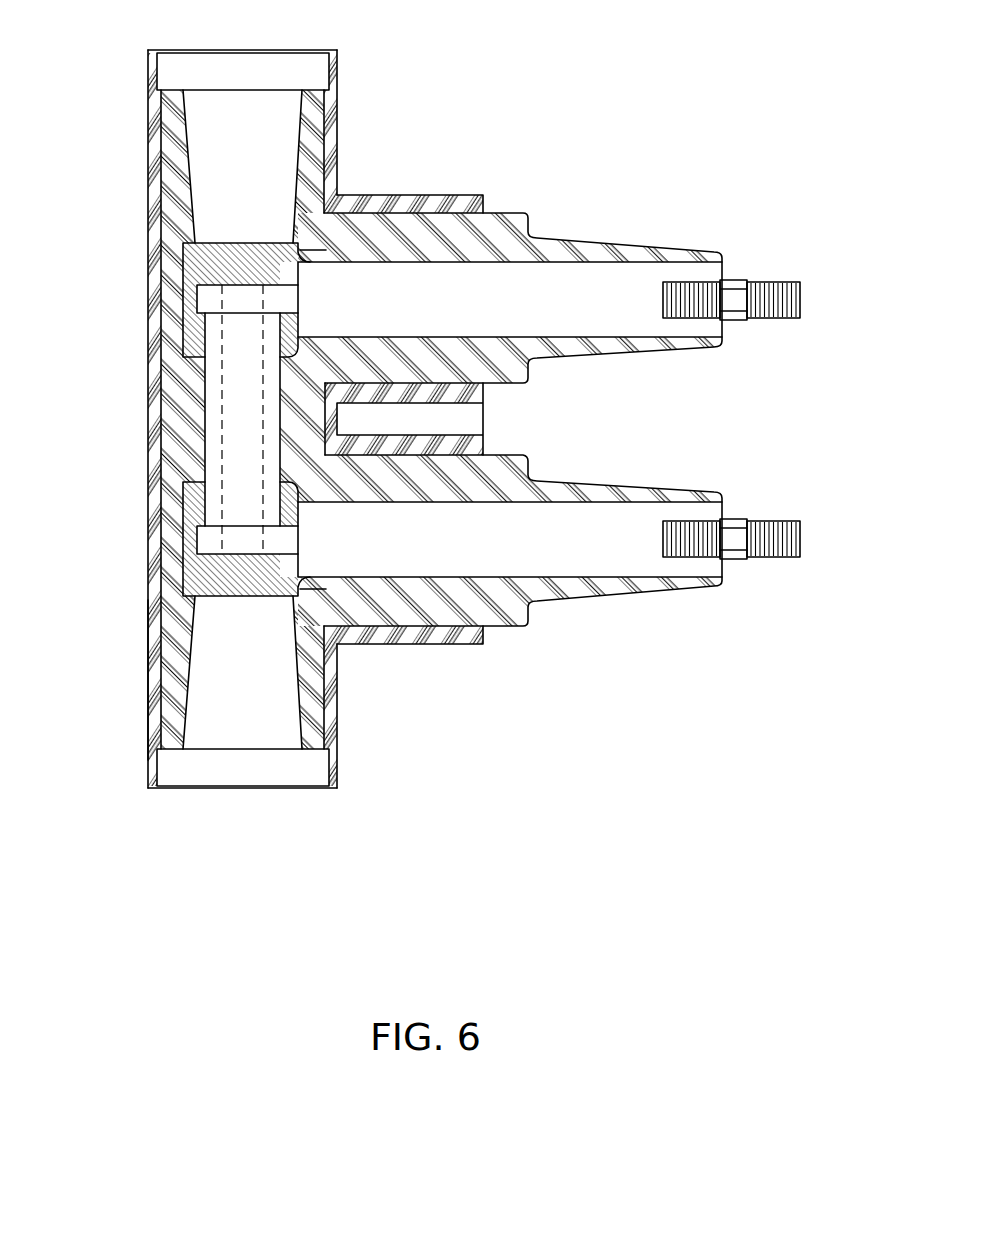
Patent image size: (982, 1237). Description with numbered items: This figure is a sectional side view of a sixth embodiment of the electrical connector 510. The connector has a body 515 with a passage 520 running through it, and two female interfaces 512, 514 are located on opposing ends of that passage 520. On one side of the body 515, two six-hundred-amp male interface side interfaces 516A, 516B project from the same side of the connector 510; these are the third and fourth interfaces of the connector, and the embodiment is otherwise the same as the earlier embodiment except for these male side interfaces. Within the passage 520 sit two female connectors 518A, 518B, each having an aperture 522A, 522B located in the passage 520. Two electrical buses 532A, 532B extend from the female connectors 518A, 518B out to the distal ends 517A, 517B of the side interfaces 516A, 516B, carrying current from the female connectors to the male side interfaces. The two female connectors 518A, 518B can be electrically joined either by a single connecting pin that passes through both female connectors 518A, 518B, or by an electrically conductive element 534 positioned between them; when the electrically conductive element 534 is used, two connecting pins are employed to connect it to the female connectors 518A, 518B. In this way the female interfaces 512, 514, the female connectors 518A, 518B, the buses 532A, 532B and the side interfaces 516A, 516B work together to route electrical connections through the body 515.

The electrical connector 510 is at (118, 260).
The female interface 512 is at (306, 50).
The female interface 514 is at (197, 790).
The body 515 is at (148, 681).
The male interface side interface 516A is at (690, 248).
The male interface side interface 516B is at (690, 490).
The distal end 517A is at (723, 325).
The distal end 517B is at (723, 556).
The female connector 518A is at (212, 297).
The female connector 518B is at (253, 533).
The passage 520 is at (272, 692).
The aperture 522A is at (243, 285).
The aperture 522B is at (243, 557).
The electrical bus 532A is at (528, 283).
The electrical bus 532B is at (528, 570).
The electrically conductive element 534 is at (237, 398).